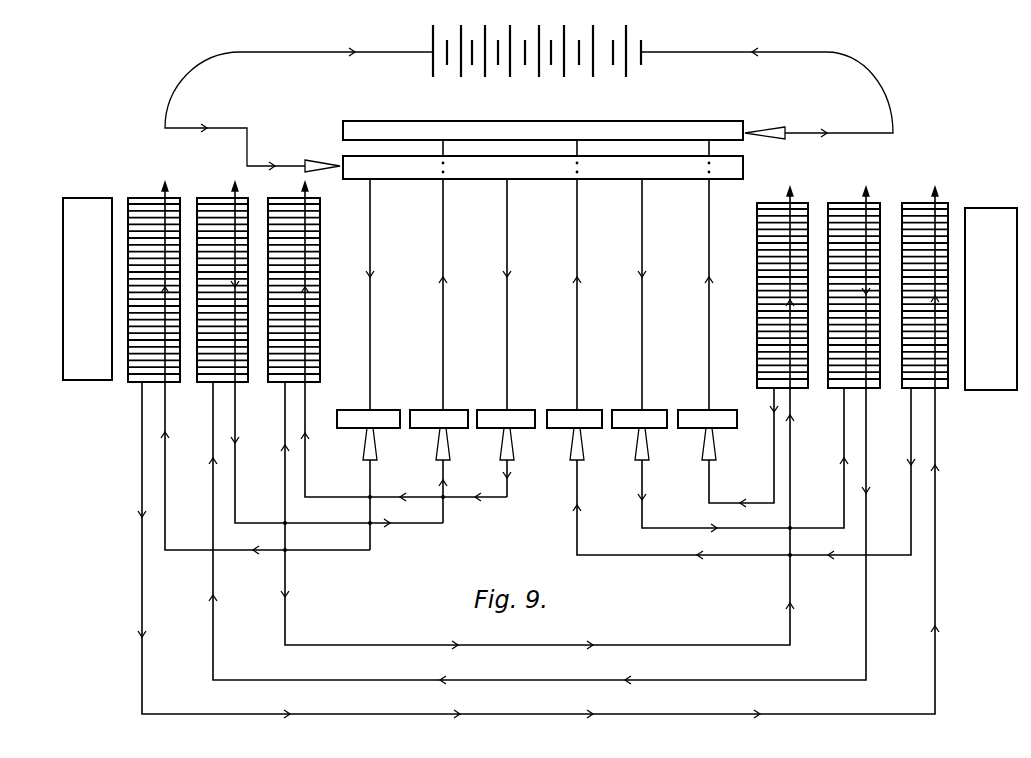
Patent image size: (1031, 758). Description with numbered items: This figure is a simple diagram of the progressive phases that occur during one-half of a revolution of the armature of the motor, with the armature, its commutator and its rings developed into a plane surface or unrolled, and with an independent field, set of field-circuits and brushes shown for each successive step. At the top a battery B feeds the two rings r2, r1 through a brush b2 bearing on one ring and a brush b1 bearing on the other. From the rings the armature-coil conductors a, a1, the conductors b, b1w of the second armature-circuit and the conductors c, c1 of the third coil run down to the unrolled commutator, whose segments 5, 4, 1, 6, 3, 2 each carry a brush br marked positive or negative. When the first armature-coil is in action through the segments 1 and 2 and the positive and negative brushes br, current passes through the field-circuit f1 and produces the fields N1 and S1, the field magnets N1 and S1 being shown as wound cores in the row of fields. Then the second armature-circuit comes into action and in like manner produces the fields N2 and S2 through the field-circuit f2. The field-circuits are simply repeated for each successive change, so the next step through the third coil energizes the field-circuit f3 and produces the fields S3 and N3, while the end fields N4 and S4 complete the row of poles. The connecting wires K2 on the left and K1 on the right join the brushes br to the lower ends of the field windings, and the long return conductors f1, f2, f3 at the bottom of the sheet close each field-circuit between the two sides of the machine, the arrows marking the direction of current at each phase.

The battery B is at (531, 51).
The ring r2 is at (543, 130).
The ring r1 is at (543, 167).
The brush b1 is at (321, 155).
The brush b2 is at (765, 118).
The armature-coil conductor c is at (374, 294).
The armature-coil conductor b1w is at (449, 294).
The armature-coil conductor a is at (512, 294).
The armature-coil conductor c1 is at (584, 294).
The armature-coil conductor b is at (647, 294).
The armature-coil conductor a1 is at (716, 294).
The commutator segment 1 is at (506, 419).
The commutator segment 2 is at (707, 419).
The commutator segment 3 is at (639, 419).
The commutator segment 4 is at (439, 419).
The commutator segment 5 is at (368, 419).
The commutator segment 6 is at (574, 419).
The brushes br is at (549, 449).
The field N4 is at (87, 278).
The field S3 is at (154, 279).
The field N2 is at (223, 279).
The field S1 is at (294, 280).
The field N1 is at (783, 285).
The field S2 is at (854, 285).
The field N3 is at (925, 285).
The field S4 is at (991, 288).
The connecting wires K2 is at (336, 468).
The connecting wires K1 is at (744, 473).
The field-circuit f1 is at (537, 515).
The field-circuit f2 is at (539, 533).
The field-circuit f3 is at (538, 550).